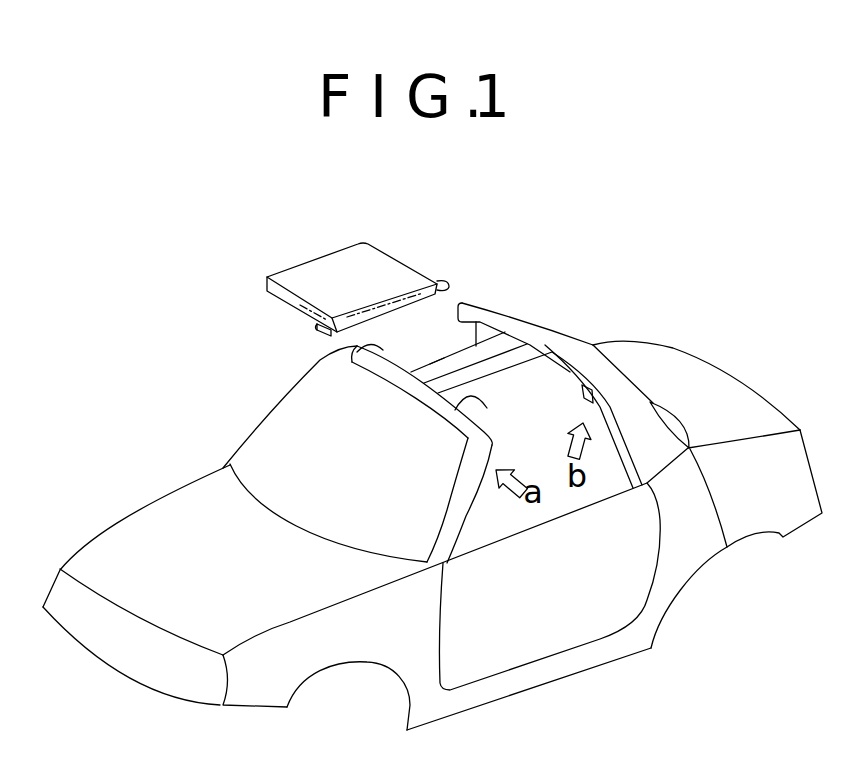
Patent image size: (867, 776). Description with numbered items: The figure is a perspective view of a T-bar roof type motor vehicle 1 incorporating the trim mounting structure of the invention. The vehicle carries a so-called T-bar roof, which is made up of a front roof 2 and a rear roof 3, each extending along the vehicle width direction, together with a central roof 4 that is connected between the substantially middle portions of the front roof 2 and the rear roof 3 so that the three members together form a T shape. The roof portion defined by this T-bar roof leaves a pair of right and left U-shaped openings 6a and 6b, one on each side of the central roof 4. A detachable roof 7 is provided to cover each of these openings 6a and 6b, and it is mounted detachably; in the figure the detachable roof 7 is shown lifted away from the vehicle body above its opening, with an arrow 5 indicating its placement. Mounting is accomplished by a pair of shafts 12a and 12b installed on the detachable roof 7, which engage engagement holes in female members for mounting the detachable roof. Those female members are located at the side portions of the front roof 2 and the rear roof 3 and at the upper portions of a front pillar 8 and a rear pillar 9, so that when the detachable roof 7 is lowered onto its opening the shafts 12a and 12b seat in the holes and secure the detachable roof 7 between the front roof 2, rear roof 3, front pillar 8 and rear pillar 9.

The vehicle body 1 is at (583, 277).
The front roof 2 is at (393, 380).
The rear roof 3 is at (565, 345).
The central roof 4 is at (488, 345).
The roof lock 5 is at (437, 355).
The U-shaped opening 6a is at (350, 358).
The U-shaped opening 6b is at (455, 432).
The detachable roof 7 is at (348, 258).
The front pillar 8 is at (453, 513).
The rear pillar 9 is at (648, 447).
The shaft 12a is at (316, 331).
The shaft 12b is at (440, 287).